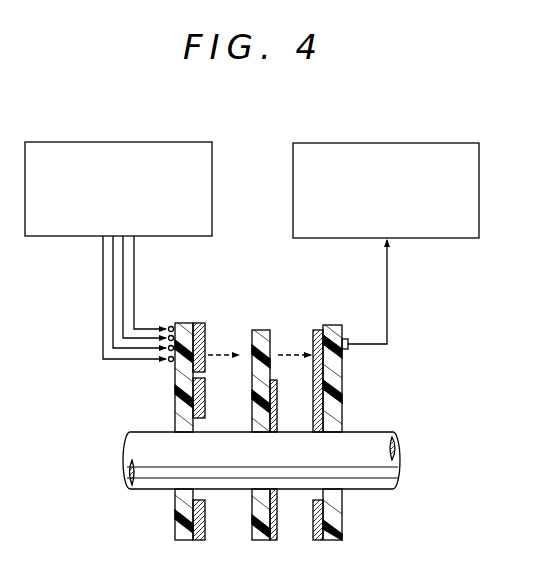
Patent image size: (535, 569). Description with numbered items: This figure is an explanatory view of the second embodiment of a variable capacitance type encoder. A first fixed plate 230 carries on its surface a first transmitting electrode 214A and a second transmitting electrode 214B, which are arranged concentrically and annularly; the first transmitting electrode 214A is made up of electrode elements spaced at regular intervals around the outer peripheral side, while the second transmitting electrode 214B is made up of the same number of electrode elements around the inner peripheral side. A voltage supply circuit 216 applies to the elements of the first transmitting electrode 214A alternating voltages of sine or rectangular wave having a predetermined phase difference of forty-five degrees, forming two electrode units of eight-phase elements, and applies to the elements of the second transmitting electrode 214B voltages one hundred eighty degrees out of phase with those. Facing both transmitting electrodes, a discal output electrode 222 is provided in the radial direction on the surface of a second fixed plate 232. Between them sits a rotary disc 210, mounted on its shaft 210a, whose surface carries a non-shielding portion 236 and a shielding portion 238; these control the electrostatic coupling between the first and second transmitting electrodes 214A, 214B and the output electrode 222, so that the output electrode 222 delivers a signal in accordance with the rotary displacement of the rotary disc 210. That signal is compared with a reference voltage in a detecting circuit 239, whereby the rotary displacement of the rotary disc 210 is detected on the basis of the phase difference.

The voltage supply circuit 216 is at (104, 142).
The detecting circuit 239 is at (382, 143).
The first transmitting electrode 214A is at (200, 323).
The second transmitting electrode 214B is at (175, 402).
The first fixed plate 230 is at (157, 357).
The non-shielding portion 236 is at (283, 324).
The output electrode 222 is at (316, 328).
The rotary disc 210 is at (252, 374).
The second fixed plate 232 is at (358, 354).
The shielding portion 238 is at (252, 398).
The shaft 210a is at (392, 440).